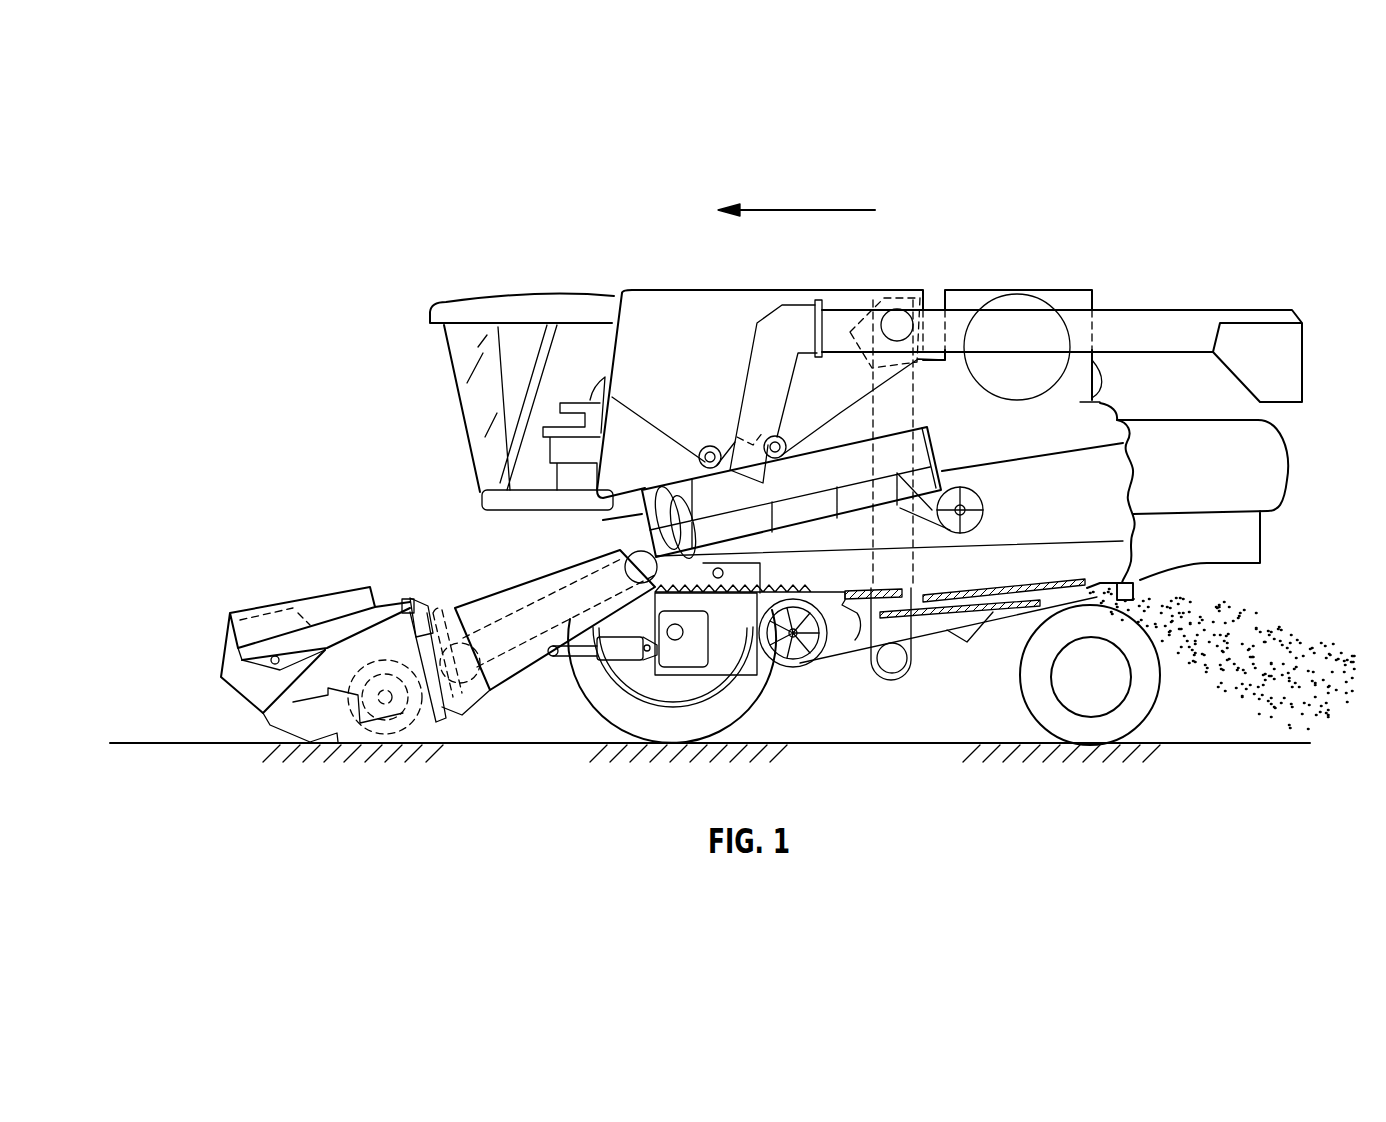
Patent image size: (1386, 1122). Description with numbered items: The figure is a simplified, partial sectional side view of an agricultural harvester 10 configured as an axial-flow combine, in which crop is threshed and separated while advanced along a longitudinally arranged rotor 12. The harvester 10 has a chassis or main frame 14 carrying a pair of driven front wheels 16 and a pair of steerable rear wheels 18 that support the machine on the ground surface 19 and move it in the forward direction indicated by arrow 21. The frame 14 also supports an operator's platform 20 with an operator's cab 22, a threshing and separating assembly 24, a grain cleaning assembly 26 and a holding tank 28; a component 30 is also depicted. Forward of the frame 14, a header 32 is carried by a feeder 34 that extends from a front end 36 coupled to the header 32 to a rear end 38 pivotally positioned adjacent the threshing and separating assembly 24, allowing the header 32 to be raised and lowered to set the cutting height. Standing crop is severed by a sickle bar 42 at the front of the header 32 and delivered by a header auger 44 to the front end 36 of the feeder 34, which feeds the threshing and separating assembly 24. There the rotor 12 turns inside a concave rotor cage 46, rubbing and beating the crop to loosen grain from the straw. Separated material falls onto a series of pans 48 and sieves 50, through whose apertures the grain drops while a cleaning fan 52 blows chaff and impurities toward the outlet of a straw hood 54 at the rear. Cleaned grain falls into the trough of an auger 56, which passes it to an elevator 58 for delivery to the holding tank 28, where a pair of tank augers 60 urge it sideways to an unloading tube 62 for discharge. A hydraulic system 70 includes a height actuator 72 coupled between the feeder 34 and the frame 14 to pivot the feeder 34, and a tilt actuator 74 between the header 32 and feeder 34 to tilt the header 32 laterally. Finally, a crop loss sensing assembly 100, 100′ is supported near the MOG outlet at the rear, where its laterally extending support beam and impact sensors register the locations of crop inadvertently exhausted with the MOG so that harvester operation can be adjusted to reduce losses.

The agricultural harvester 10 is at (490, 245).
The arrow indicating forward direction of movement 21 is at (812, 210).
The holding tank 28 is at (698, 288).
The grain tank 30 is at (995, 292).
The unloading tube 62 is at (1140, 325).
The operator's cab 22 is at (470, 400).
The operator's platform 20 is at (480, 505).
The tank augers 60 is at (773, 437).
The concave rotor cage 46 is at (837, 450).
The elevator 58 is at (913, 388).
The rotor 12 is at (672, 505).
The threshing and separating assembly 24 is at (814, 488).
The straw hood 54 is at (1280, 478).
The header 32 is at (290, 585).
The front end of the feeder 36 is at (410, 650).
The feeder 34 is at (463, 578).
The rear end of the feeder 38 is at (617, 533).
The pans 48 is at (800, 585).
The sieves 50 is at (933, 587).
The crop loss sensing assembly 100 is at (1152, 588).
The crop loss sensing assembly 100′ is at (1125, 591).
The main frame 14 is at (1133, 600).
The rear wheels 18 is at (1152, 688).
The front wheels 16 is at (616, 712).
The height actuator 72 is at (585, 668).
The cleaning fan 52 is at (794, 666).
The auger 56 is at (893, 668).
The grain cleaning assembly 26 is at (859, 682).
The ground surface 19 is at (217, 742).
The sickle bar 42 is at (282, 730).
The header auger 44 is at (393, 713).
The tilt actuator 74 is at (465, 715).
The hydraulic system 70 is at (490, 712).